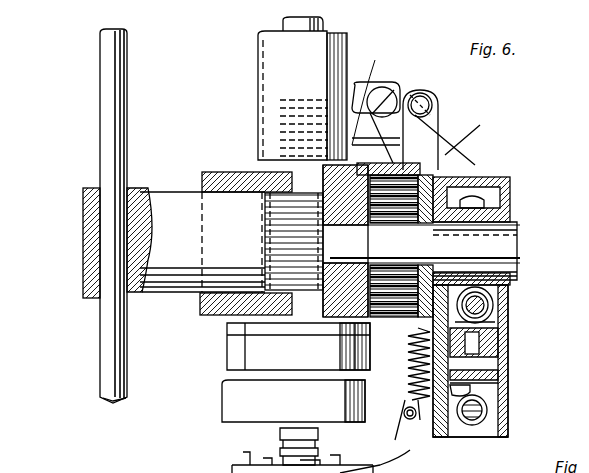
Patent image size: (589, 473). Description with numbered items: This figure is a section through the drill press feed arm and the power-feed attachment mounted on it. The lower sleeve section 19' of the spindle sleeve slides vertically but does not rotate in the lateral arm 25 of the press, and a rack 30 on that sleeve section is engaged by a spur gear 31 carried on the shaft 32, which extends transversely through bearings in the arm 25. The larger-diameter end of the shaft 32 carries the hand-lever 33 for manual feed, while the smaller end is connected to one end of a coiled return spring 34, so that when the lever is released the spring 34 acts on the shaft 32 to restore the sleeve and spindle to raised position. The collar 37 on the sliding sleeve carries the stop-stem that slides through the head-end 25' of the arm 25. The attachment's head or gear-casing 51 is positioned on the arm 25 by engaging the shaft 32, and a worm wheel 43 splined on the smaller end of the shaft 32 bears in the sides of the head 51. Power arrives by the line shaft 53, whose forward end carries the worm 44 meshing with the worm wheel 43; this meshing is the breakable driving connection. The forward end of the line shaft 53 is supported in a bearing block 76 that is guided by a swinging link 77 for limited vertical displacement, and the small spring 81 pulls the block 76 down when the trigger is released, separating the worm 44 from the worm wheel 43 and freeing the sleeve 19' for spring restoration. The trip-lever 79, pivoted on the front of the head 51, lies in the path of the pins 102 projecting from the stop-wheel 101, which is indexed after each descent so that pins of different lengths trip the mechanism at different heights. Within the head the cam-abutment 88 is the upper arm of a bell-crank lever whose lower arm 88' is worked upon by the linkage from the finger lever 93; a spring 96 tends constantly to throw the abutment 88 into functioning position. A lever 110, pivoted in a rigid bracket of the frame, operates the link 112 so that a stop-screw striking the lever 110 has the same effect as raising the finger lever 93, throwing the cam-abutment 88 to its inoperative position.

The hand-lever 33 is at (104, 105).
The shaft 32 is at (165, 295).
The lateral arm 25 is at (225, 235).
The head-end of arm 25' is at (391, 342).
The spur gear 31 is at (265, 225).
The worm wheel 43 is at (512, 196).
The bearing block 76 is at (495, 350).
The line shaft 53 is at (493, 302).
The worm 44 is at (480, 318).
The swinging link 77 is at (480, 382).
The cam-abutment 88 is at (512, 368).
The small spring 81 is at (485, 400).
The head or gear-casing 51 is at (440, 437).
The lower sleeve section 19' is at (272, 88).
The rack 30 is at (285, 120).
The trip-lever 79 is at (376, 105).
The lever 110 is at (372, 90).
The link 112 is at (428, 120).
The coiled return spring 34 is at (448, 140).
The collar 37 is at (222, 395).
The spring 96 is at (410, 376).
The lower arm of bell-crank lever 88' is at (397, 422).
The stop-wheel 101 is at (275, 450).
The pins 102 is at (240, 470).
The finger lever 93 is at (387, 461).